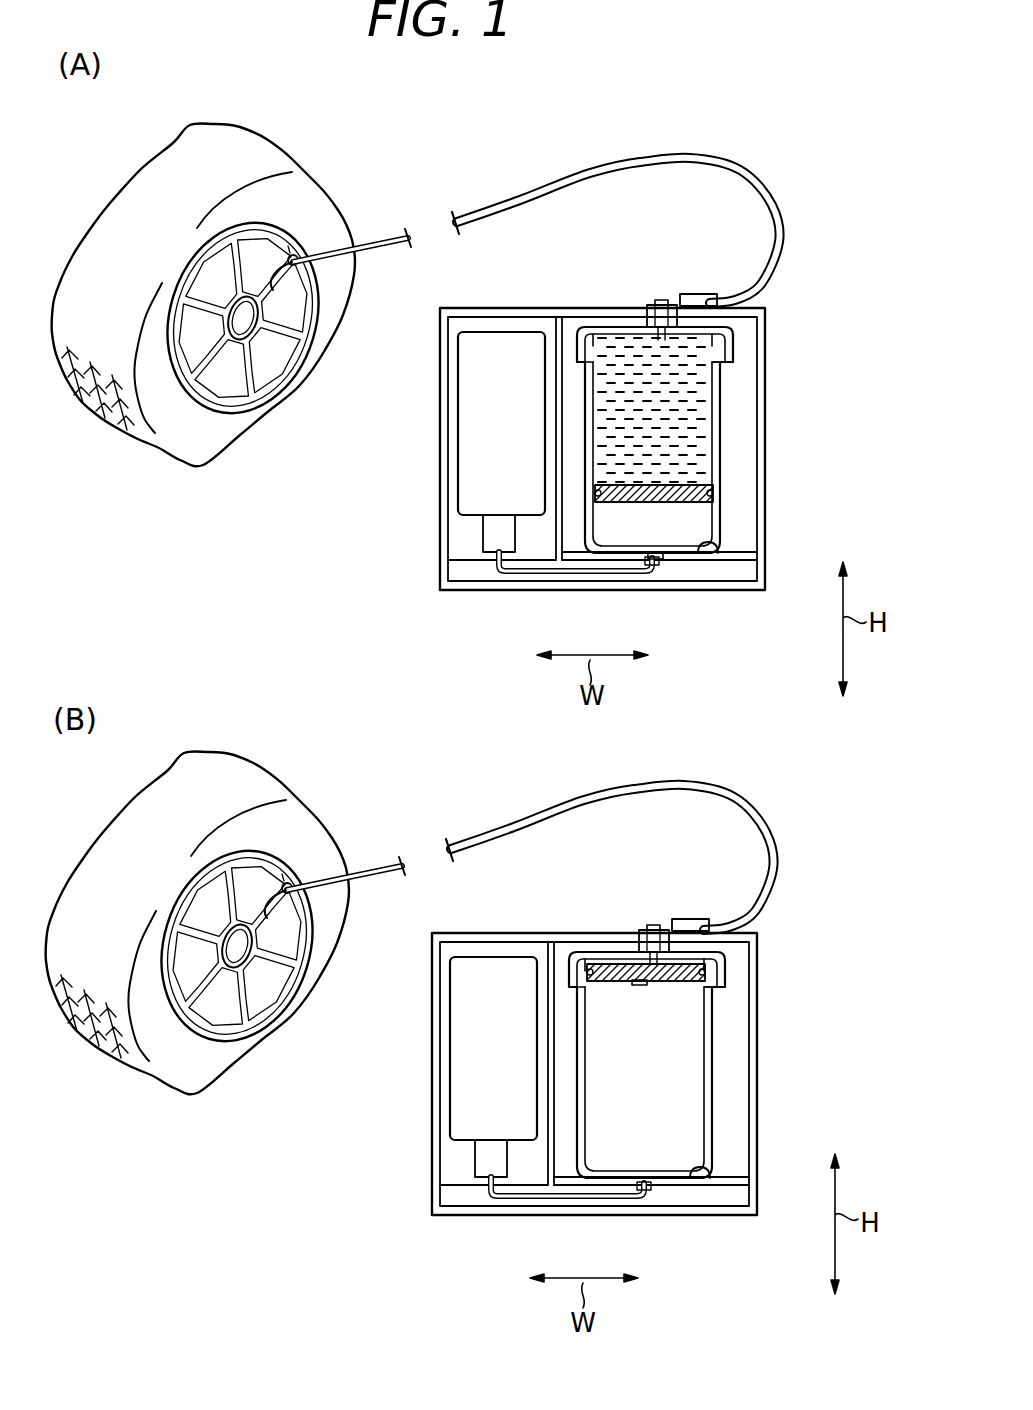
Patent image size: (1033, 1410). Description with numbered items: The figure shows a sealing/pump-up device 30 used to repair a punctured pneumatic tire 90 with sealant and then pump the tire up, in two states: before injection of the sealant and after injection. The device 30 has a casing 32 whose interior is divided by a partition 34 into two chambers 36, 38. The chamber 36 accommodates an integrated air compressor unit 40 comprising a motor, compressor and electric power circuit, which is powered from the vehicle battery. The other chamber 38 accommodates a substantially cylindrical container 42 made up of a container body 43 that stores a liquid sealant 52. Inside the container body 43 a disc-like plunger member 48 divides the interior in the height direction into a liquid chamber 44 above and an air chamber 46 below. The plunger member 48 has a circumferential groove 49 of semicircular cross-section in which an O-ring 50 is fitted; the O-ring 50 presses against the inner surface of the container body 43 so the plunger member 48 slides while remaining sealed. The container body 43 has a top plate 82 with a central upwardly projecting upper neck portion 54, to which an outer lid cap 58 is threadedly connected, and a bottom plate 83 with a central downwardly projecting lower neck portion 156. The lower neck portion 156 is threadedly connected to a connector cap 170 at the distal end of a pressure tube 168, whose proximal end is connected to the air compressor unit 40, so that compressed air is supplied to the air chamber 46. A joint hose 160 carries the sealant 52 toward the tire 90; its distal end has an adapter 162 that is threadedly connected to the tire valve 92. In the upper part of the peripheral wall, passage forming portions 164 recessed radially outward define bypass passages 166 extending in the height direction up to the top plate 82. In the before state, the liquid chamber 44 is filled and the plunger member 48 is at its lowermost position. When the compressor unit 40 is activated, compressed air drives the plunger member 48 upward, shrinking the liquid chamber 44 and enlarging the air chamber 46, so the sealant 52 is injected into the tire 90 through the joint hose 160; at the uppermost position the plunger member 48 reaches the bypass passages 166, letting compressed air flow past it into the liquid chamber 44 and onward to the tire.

The sealing/pump-up device 30 is at (808, 236).
The casing 32 is at (762, 425).
The partition 34 is at (575, 328).
The chamber 36 is at (463, 540).
The chamber 38 is at (742, 505).
The air compressor unit 40 is at (458, 440).
The cylindrical container 42 is at (582, 402).
The container body 43 is at (745, 402).
The liquid chamber 44 is at (714, 478).
The air chamber 46 is at (710, 545).
The plunger member 48 is at (680, 506).
The circumferential groove 49 is at (708, 493).
The O-ring 50 is at (592, 494).
The sealant 52 is at (625, 332).
The upper neck portion 54 is at (638, 300).
The outer lid cap 58 is at (668, 300).
The top plate 82 is at (698, 298).
The bottom plate 83 is at (592, 580).
The tire 90 is at (288, 425).
The tire valve 92 is at (291, 253).
The lower neck portion 156 is at (640, 592).
The joint hose 160 is at (480, 208).
The adapter 162 is at (270, 283).
The passage forming portion 164 is at (735, 350).
The bypass passage 166 is at (596, 335).
The pressure tube 168 is at (487, 578).
The connector cap 170 is at (657, 572).